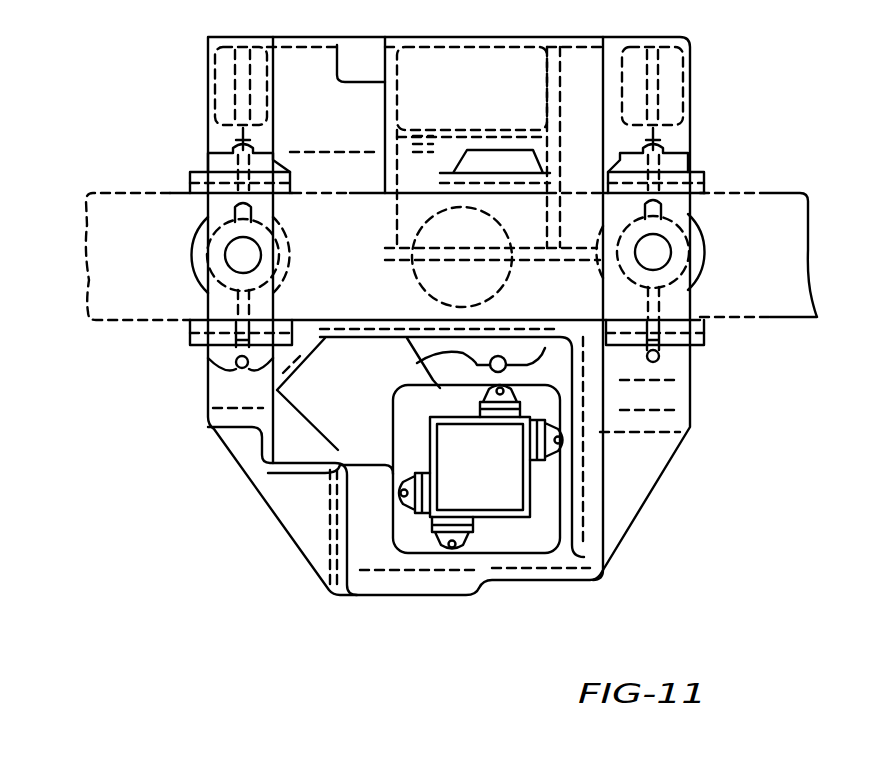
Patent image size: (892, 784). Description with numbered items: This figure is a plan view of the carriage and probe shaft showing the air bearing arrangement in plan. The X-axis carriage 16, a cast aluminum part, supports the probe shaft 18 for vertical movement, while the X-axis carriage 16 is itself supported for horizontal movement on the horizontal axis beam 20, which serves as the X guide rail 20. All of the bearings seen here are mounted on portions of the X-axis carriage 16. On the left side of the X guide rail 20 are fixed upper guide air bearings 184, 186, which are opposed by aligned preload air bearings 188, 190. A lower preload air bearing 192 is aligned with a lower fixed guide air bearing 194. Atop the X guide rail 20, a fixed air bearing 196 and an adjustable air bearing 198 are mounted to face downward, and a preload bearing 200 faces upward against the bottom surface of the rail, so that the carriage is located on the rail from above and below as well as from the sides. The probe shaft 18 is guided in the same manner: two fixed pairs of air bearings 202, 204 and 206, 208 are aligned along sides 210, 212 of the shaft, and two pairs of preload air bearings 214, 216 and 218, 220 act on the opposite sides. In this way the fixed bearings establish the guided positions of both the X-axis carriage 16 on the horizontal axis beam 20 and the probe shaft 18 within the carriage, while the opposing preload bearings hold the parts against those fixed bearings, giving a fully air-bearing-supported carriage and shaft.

The X-axis carriage 16 is at (690, 66).
The probe shaft 18 is at (577, 578).
The horizontal axis beam 20 is at (102, 200).
The fixed upper guide air bearing 184 is at (197, 166).
The fixed upper guide air bearing 186 is at (693, 155).
The preload air bearing 188 is at (200, 350).
The preload air bearing 190 is at (697, 343).
The lower preload air bearing 192 is at (455, 165).
The lower fixed guide air bearing 194 is at (417, 363).
The fixed air bearing 196 is at (188, 236).
The adjustable air bearing 198 is at (702, 230).
The preload bearing 200 is at (430, 213).
The fixed air bearing 202 is at (306, 440).
The fixed air bearing 204 is at (480, 400).
The fixed air bearing 206 is at (674, 453).
The fixed air bearing 208 is at (548, 458).
The side of probe shaft 210 is at (461, 412).
The side of probe shaft 212 is at (533, 503).
The preload air bearing 214 is at (411, 559).
The preload air bearing 216 is at (403, 520).
The preload air bearing 218 is at (528, 573).
The preload air bearing 220 is at (470, 535).